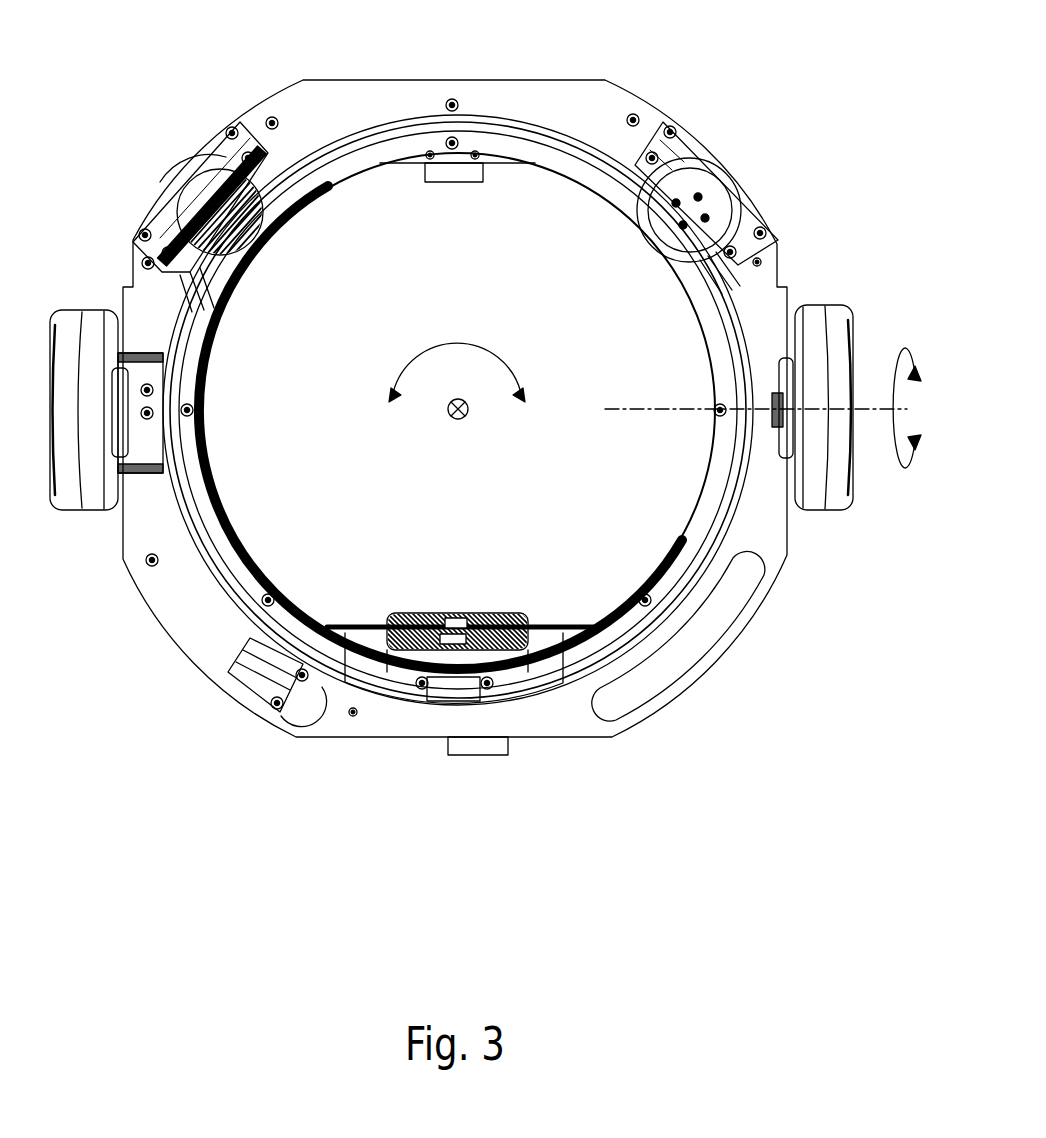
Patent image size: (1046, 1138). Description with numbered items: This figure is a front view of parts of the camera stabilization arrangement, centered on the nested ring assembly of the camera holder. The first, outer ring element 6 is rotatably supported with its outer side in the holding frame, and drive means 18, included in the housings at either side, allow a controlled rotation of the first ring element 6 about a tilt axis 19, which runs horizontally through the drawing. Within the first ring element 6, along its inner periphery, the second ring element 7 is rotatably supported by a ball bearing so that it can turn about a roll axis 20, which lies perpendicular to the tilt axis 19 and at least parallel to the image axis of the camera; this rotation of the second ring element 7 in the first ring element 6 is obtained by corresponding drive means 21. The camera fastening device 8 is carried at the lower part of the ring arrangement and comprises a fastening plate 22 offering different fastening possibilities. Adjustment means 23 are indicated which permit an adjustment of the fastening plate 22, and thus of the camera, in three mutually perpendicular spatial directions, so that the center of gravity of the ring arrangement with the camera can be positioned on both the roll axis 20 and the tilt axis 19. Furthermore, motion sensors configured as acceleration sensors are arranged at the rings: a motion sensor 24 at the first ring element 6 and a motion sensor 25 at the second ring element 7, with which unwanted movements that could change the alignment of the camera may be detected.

The first ring element 6 is at (347, 106).
The second ring element 7 is at (402, 145).
The camera fastening device 8 is at (396, 583).
The drive means 18 is at (70, 482).
The tilt axis 19 is at (917, 410).
The roll axis 20 is at (463, 420).
The drive means 21 is at (188, 160).
The fastening plate 22 is at (470, 612).
The adjustment means 23 is at (452, 690).
The motion sensor 24 is at (482, 748).
The motion sensor 25 is at (455, 178).